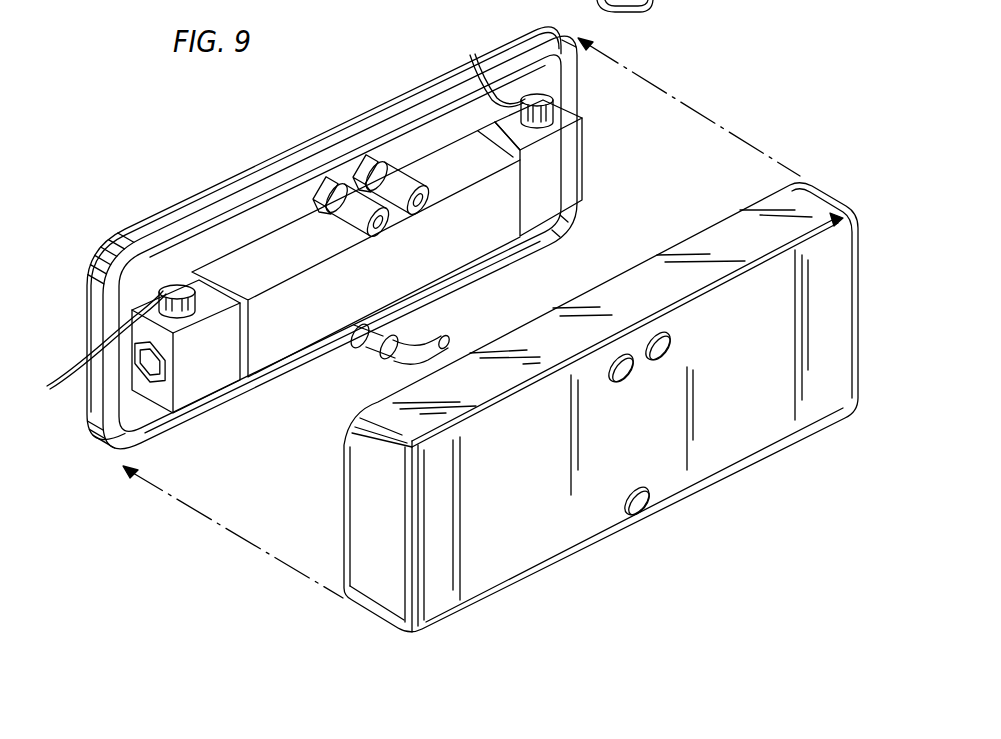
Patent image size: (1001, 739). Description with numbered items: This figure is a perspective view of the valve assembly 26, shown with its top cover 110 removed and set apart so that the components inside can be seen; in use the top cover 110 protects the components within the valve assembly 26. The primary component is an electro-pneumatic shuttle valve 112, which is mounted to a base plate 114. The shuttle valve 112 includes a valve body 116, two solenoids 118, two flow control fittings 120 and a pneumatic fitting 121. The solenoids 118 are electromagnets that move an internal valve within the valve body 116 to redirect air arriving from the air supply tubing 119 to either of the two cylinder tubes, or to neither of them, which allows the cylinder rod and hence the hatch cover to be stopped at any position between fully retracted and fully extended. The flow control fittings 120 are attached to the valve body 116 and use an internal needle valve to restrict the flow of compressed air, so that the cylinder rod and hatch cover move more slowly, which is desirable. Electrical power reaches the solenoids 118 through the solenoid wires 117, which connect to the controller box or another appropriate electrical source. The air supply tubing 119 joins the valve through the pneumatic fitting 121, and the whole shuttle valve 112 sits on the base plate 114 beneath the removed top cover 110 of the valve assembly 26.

The valve assembly 26 is at (286, 159).
The top cover 110 is at (368, 535).
The electro-pneumatic shuttle valve 112 is at (405, 283).
The base plate 114 is at (402, 95).
The valve body 116 is at (285, 357).
The solenoid wires 117 is at (58, 383).
The solenoids 118 is at (221, 373).
The air supply tubing 119 is at (396, 364).
The flow control fittings 120 is at (398, 182).
The pneumatic fitting 121 is at (397, 328).